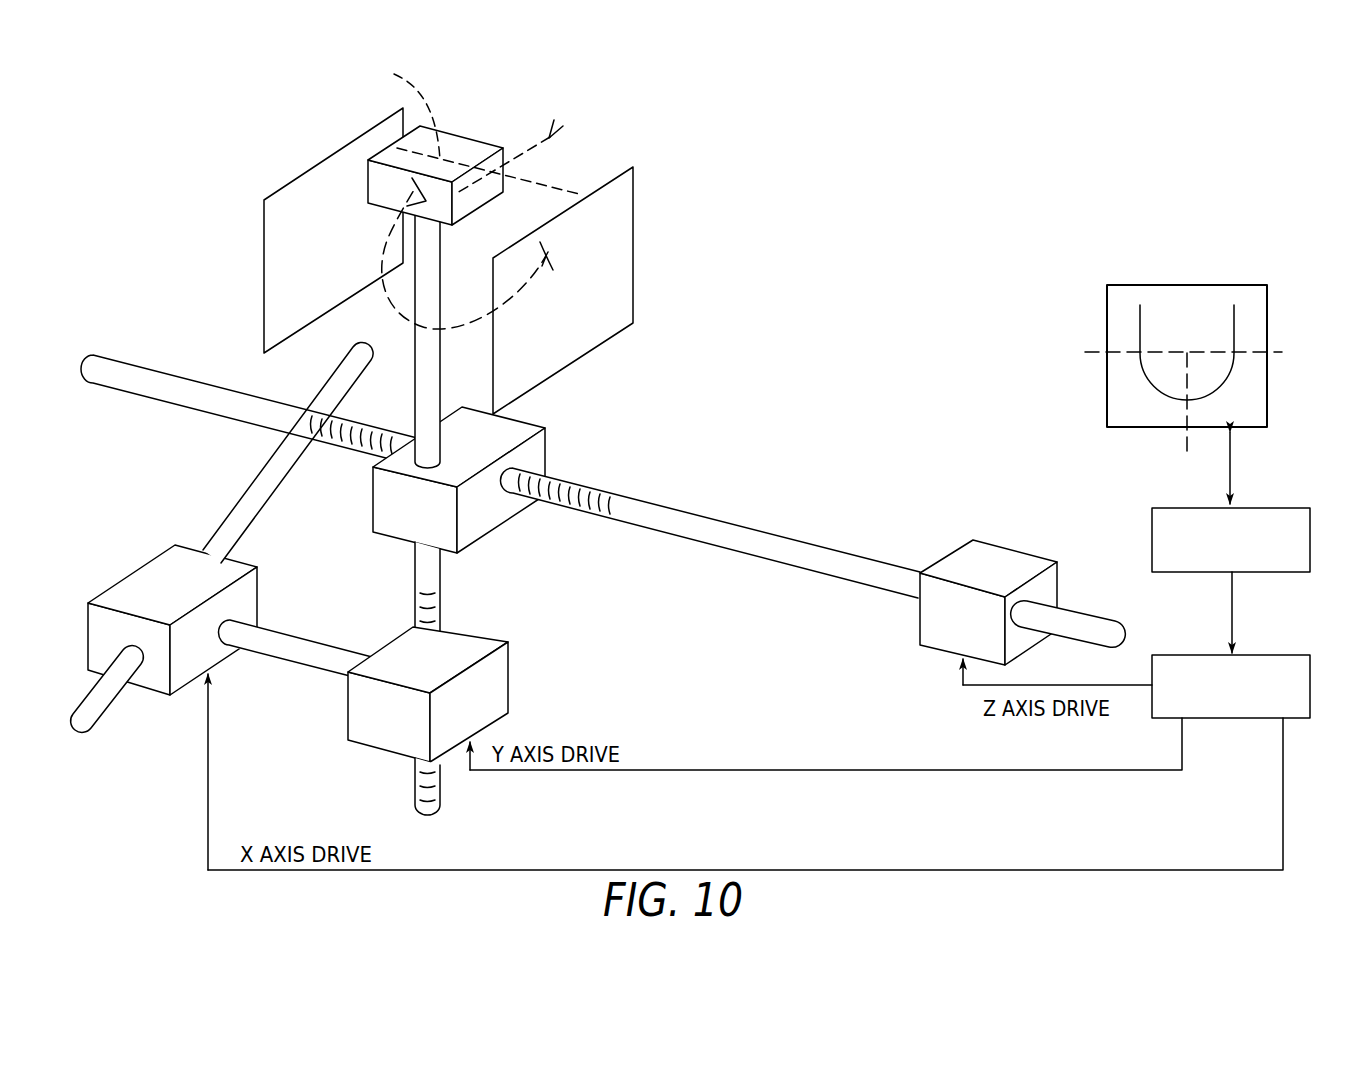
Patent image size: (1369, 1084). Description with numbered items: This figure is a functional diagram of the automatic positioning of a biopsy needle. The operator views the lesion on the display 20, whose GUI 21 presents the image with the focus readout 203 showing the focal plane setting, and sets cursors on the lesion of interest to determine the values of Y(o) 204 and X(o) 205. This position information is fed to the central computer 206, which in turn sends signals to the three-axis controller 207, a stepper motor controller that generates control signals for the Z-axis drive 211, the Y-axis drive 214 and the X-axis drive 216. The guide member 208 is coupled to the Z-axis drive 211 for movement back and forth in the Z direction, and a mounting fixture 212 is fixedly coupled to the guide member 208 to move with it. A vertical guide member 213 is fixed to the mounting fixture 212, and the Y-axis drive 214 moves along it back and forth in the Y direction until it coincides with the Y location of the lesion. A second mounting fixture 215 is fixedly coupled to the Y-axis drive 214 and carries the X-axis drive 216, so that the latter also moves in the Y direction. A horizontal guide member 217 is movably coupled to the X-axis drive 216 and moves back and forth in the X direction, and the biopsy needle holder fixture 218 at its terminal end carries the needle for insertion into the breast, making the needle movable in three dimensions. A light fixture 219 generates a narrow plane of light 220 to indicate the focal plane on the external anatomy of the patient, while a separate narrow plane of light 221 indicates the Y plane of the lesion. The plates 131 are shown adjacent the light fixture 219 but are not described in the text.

The display 20 is at (1246, 280).
The GUI 21 is at (1101, 252).
The reflector plates 131 is at (280, 300).
The focus Z coordinate readout 203 is at (1100, 263).
The Y(o) 204 is at (1062, 356).
The X(o) 205 is at (1180, 477).
The central computer 206 is at (1258, 508).
The 3-axis controller 207 is at (1260, 655).
The guide member 208 is at (828, 518).
The Z-axis drive 211 is at (915, 661).
The mounting fixture 212 is at (527, 432).
The vertical guide member 213 is at (413, 808).
The Y-axis drive 214 is at (548, 677).
The mounting fixture 215 is at (305, 652).
The X-axis drive 216 is at (152, 541).
The horizontal guide member 217 is at (110, 690).
The biopsy needle holder fixture 218 is at (367, 337).
The light fixture 219 is at (383, 160).
The narrow plane of light 220 is at (468, 134).
The narrow plane of light 221 is at (551, 135).